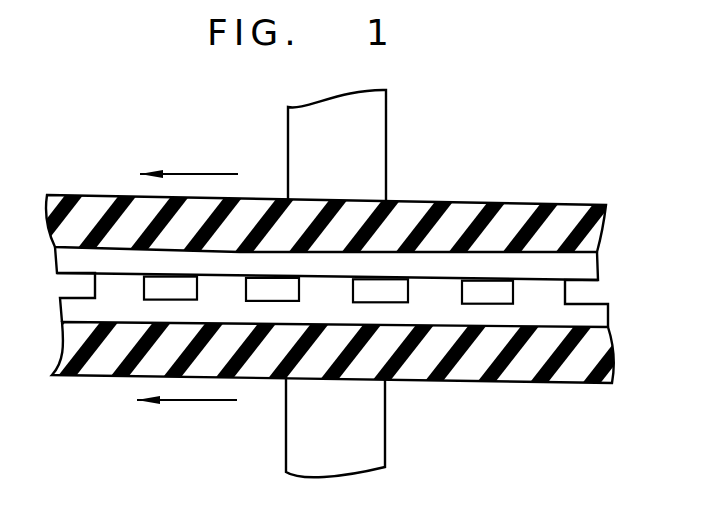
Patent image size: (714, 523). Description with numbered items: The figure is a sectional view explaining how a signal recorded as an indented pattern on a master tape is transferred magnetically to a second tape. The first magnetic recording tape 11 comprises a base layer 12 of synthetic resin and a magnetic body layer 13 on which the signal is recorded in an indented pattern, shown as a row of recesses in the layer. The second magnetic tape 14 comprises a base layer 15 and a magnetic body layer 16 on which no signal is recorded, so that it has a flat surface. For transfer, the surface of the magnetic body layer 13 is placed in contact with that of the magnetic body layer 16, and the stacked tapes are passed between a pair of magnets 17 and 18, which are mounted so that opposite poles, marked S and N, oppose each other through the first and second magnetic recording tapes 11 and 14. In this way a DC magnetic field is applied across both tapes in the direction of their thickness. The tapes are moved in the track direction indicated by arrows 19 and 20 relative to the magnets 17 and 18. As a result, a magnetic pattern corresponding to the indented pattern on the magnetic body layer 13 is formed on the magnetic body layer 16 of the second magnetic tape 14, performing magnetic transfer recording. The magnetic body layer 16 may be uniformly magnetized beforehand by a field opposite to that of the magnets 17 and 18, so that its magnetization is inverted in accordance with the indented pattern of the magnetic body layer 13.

The first magnetic recording tape 11 is at (326, 357).
The base layer 12 is at (608, 372).
The magnetic body layer 13 is at (598, 323).
The second magnetic tape 14 is at (323, 220).
The base layer 15 is at (587, 247).
The magnetic body layer 16 is at (595, 272).
The magnet 17 is at (372, 446).
The magnet 18 is at (388, 142).
The arrow 19 is at (200, 174).
The arrow 20 is at (202, 401).